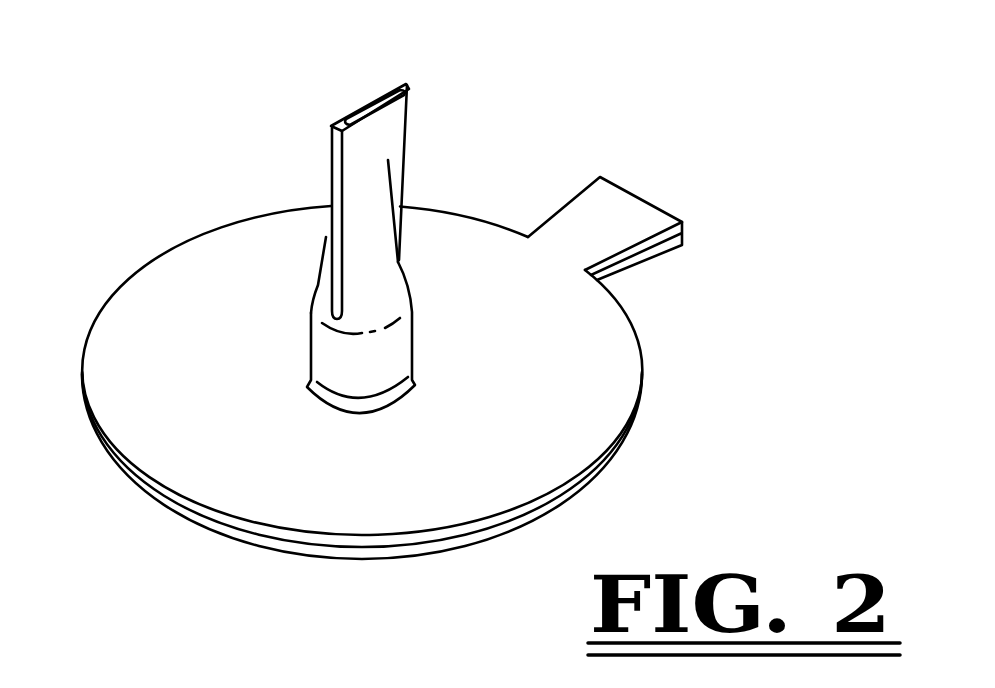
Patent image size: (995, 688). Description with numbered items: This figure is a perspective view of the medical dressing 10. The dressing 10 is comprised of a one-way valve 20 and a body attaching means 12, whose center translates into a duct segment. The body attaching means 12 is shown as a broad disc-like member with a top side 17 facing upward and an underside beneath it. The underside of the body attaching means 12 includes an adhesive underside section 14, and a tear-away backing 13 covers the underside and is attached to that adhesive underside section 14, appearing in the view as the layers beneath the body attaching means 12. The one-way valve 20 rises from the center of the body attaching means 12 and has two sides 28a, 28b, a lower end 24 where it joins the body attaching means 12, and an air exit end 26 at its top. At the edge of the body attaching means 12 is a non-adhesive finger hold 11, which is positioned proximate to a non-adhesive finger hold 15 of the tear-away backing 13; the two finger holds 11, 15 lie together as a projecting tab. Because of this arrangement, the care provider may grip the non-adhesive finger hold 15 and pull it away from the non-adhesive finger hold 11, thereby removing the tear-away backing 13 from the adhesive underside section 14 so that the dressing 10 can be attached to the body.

The medical dressing 10 is at (98, 172).
The non-adhesive finger hold 11 is at (623, 203).
The body attaching means 12 is at (620, 392).
The tear-away backing 13 is at (438, 550).
The adhesive underside section 14 is at (297, 542).
The non-adhesive finger hold 15 is at (680, 247).
The top side 17 is at (487, 467).
The one-way valve 20 is at (278, 287).
The lower end 24 is at (417, 347).
The air exit end 26 is at (380, 97).
The side 28a is at (397, 143).
The side 28b is at (360, 102).